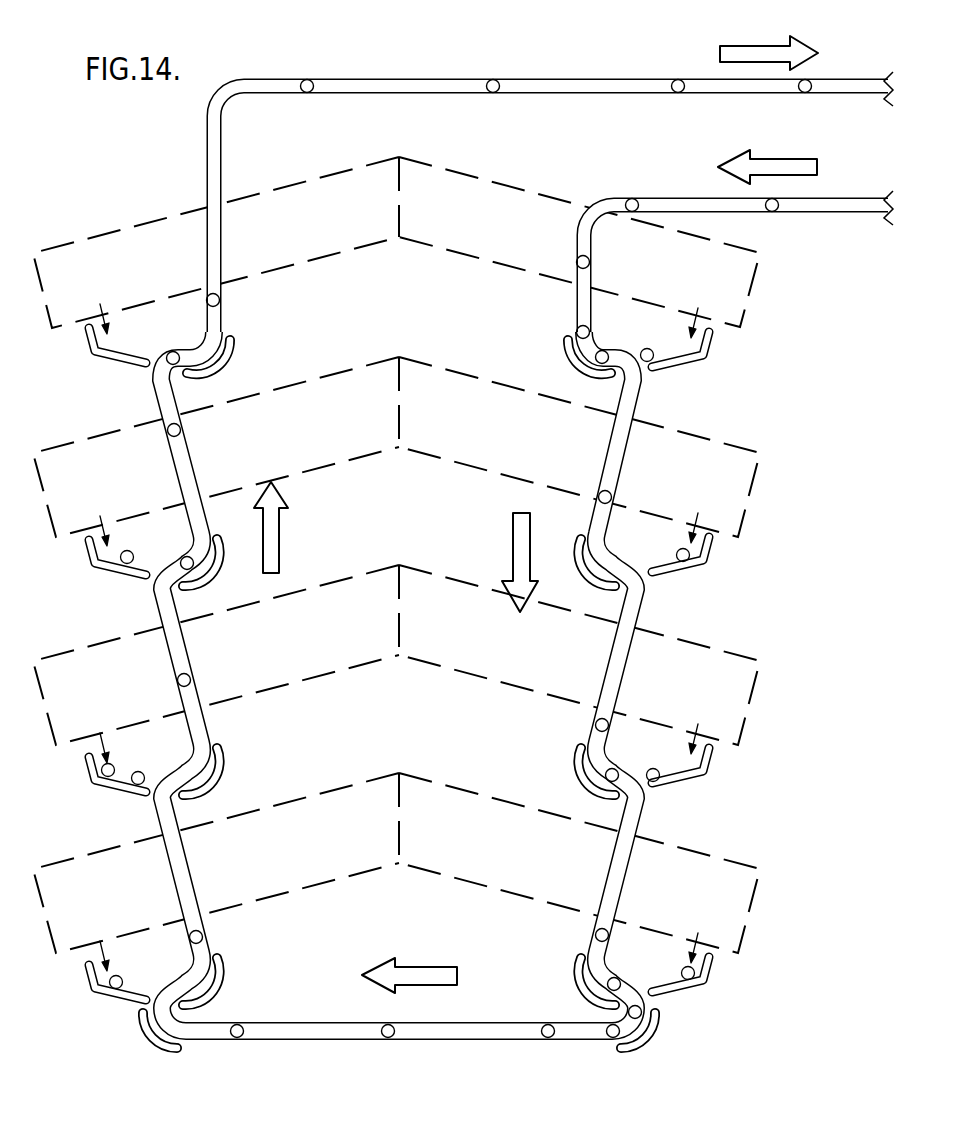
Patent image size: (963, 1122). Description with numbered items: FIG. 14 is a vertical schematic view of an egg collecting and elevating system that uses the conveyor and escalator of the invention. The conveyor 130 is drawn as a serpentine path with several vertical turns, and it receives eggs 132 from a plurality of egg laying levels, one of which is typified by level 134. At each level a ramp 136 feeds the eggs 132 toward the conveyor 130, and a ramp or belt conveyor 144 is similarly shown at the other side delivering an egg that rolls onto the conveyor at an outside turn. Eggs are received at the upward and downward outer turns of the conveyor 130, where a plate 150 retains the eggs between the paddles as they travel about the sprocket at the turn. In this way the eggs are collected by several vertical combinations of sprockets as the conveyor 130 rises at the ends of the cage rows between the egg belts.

The conveyor 130 is at (838, 216).
The eggs 132 is at (646, 349).
The level 134 is at (748, 312).
The ramp 136 is at (702, 366).
The ramp or belt conveyor 144 is at (104, 352).
The plate 150 is at (231, 350).